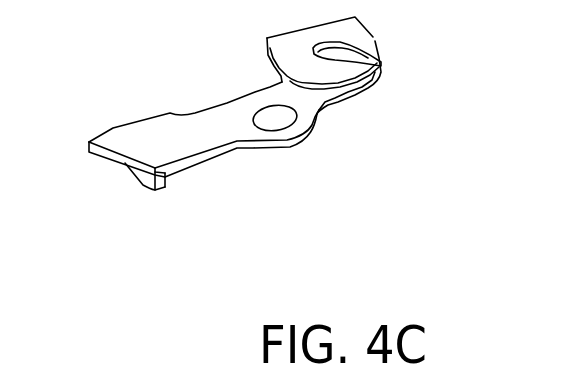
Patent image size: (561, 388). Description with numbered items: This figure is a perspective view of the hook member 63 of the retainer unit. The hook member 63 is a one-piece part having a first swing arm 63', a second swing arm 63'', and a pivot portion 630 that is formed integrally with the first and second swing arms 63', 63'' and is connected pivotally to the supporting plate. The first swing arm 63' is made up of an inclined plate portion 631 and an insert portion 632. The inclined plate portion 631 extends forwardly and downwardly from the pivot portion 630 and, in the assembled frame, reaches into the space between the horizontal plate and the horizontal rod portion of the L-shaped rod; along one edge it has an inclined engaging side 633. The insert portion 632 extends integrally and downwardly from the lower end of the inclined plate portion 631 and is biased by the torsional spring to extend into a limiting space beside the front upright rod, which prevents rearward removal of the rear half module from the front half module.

The hook member 63 is at (273, 150).
The first swing arm 63' is at (185, 80).
The second swing arm 63'' is at (394, 65).
The pivot portion 630 is at (288, 148).
The inclined plate portion 631 is at (208, 162).
The insert portion 632 is at (158, 191).
The inclined engaging side 633 is at (106, 157).